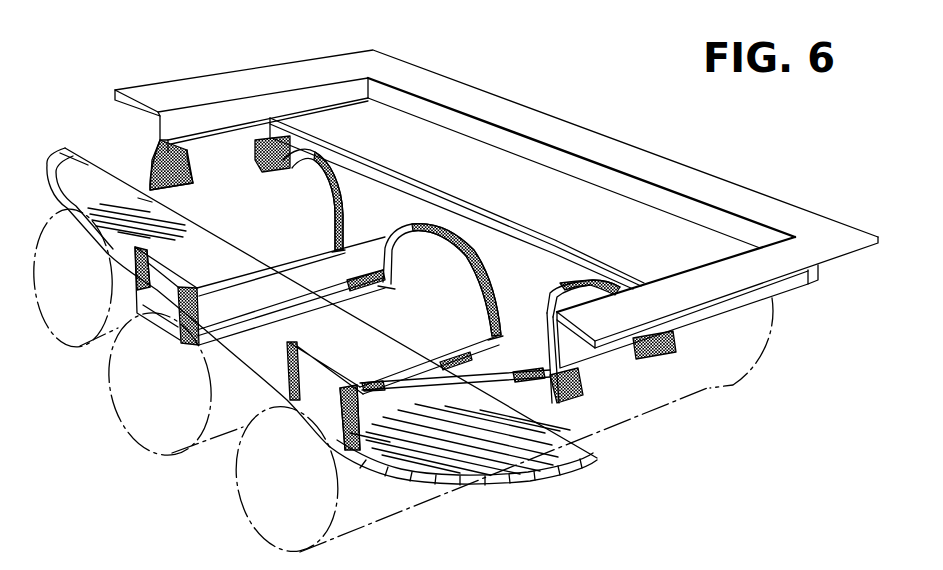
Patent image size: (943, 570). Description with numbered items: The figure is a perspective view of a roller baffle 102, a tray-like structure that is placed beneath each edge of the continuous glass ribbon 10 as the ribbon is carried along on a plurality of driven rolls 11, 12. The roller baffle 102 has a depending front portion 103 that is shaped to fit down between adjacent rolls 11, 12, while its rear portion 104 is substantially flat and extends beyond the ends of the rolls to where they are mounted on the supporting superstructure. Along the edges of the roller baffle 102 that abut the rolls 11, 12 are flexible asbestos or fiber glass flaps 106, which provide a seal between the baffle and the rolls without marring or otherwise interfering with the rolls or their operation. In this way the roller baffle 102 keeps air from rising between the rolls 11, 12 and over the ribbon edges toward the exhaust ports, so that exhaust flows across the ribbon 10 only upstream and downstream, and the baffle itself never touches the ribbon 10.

The continuous glass ribbon 10 is at (563, 462).
The roll 11 is at (100, 362).
The roll 12 is at (200, 458).
The roller baffle 102 is at (663, 150).
The depending front portion 103 is at (505, 343).
The rear portion 104 is at (620, 234).
The flexible flaps 106 is at (152, 167).